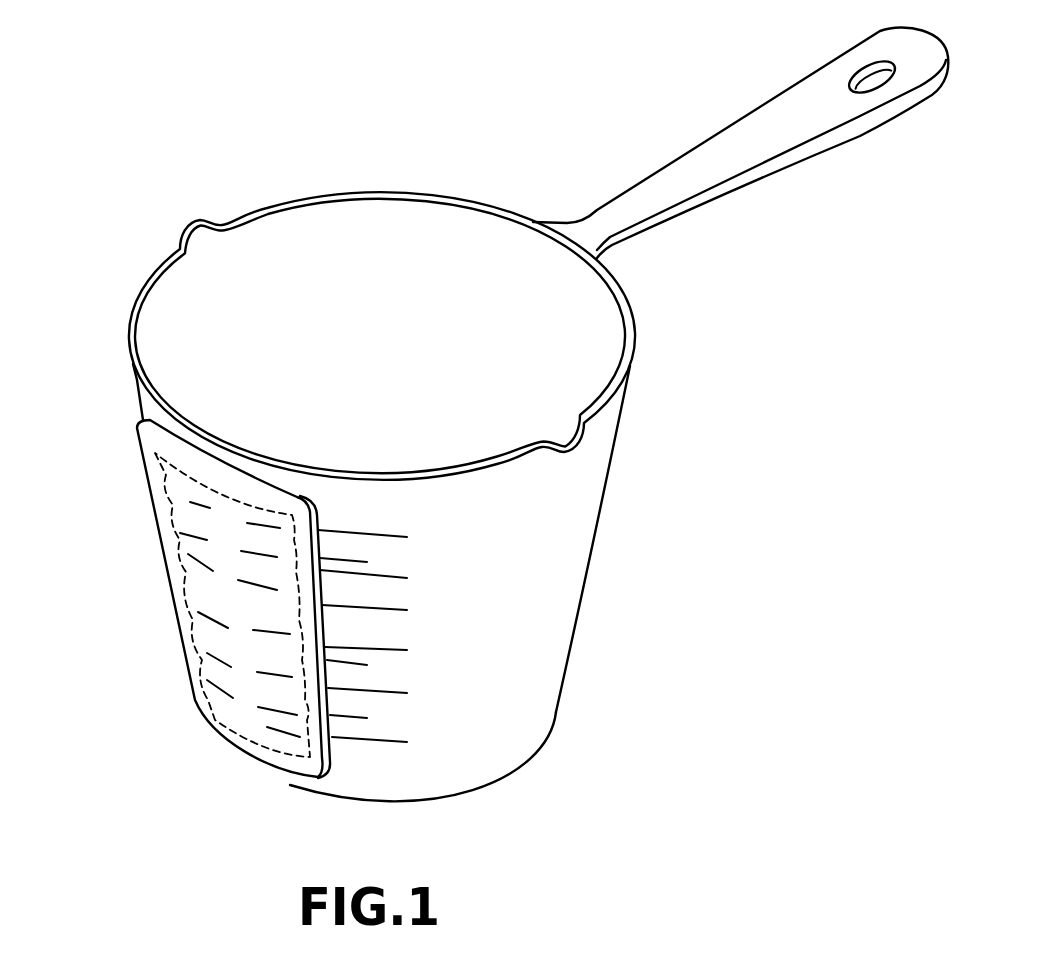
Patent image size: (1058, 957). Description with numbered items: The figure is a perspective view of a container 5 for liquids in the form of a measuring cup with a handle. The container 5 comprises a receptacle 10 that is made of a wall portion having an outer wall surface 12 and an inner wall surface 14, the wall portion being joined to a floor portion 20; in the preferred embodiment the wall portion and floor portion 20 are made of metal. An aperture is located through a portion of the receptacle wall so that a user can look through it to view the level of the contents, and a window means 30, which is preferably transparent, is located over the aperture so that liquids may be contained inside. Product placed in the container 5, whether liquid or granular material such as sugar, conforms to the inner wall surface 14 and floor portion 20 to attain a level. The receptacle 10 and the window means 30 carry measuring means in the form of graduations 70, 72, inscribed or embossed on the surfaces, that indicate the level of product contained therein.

The container 5 is at (499, 446).
The receptacle 10 is at (627, 303).
The outer wall surface 12 is at (573, 527).
The inner wall surface 14 is at (187, 325).
The floor portion 20 is at (447, 795).
The window means 30 is at (215, 718).
The graduations 70 is at (378, 612).
The graduations 72 is at (190, 532).